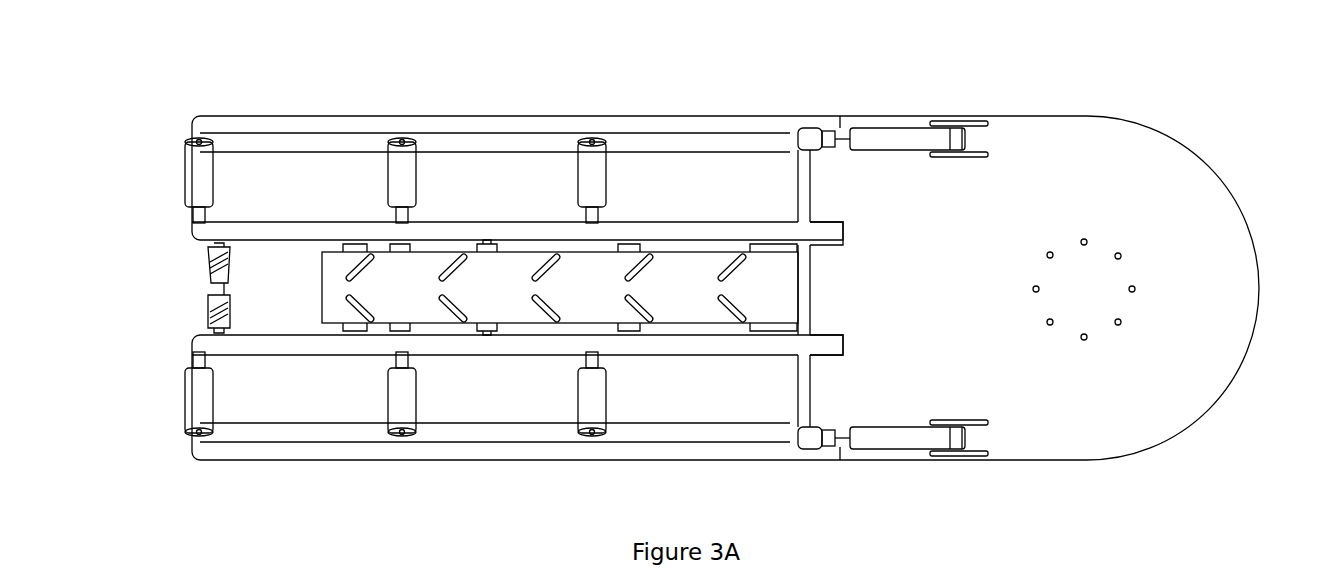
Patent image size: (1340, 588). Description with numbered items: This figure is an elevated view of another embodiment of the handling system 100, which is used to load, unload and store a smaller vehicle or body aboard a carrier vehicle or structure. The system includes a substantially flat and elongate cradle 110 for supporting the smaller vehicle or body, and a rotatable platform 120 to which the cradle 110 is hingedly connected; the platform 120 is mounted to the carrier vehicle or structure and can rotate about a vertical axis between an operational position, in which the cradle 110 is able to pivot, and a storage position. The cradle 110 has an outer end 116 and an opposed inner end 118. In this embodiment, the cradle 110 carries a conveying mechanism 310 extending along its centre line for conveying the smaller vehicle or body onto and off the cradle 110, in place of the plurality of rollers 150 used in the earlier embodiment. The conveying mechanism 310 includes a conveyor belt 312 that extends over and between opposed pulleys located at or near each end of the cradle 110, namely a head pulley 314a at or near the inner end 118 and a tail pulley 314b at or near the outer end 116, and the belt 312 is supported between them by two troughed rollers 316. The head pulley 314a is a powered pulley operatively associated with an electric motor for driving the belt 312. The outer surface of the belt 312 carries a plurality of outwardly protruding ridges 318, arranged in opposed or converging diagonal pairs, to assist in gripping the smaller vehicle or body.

The handling system 100 is at (1082, 247).
The cradle 110 is at (505, 150).
The outer end 116 is at (190, 353).
The inner end 118 is at (808, 200).
The rotatable platform 120 is at (1195, 287).
The rollers 150 is at (593, 165).
The conveying mechanism 310 is at (522, 293).
The conveyor belt 312 is at (547, 283).
The head pulley 314a is at (843, 225).
The tail pulley 314b is at (322, 245).
The troughed rollers 316 is at (487, 245).
The protruding ridges 318 is at (363, 262).